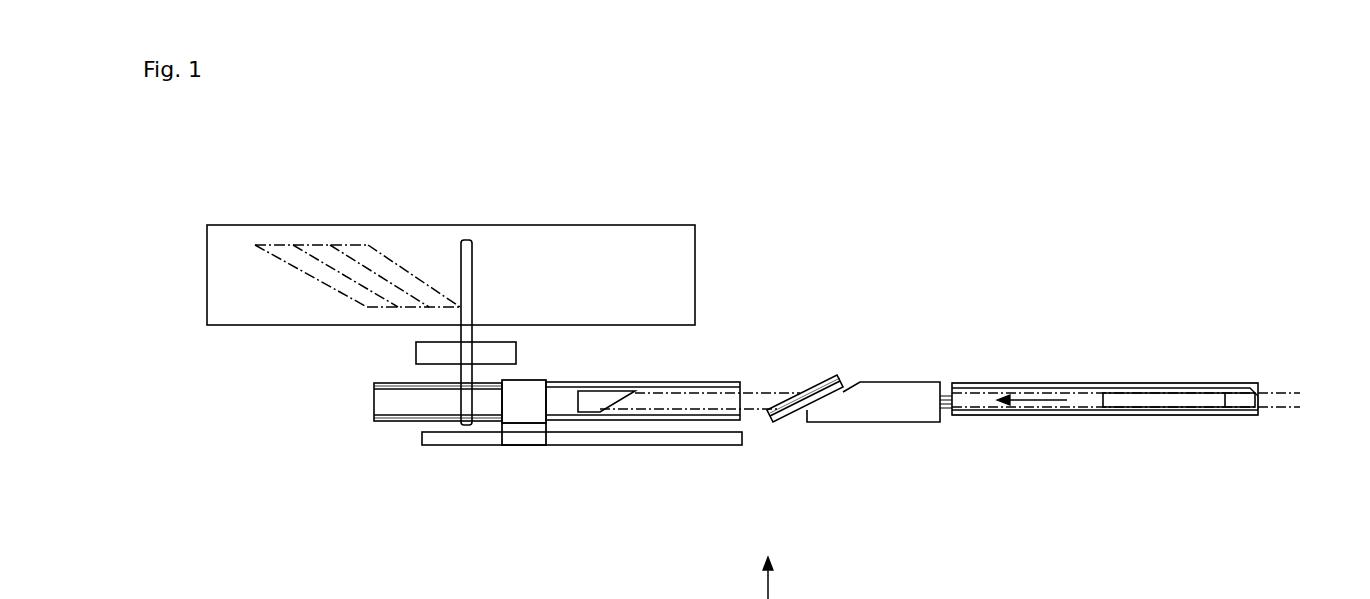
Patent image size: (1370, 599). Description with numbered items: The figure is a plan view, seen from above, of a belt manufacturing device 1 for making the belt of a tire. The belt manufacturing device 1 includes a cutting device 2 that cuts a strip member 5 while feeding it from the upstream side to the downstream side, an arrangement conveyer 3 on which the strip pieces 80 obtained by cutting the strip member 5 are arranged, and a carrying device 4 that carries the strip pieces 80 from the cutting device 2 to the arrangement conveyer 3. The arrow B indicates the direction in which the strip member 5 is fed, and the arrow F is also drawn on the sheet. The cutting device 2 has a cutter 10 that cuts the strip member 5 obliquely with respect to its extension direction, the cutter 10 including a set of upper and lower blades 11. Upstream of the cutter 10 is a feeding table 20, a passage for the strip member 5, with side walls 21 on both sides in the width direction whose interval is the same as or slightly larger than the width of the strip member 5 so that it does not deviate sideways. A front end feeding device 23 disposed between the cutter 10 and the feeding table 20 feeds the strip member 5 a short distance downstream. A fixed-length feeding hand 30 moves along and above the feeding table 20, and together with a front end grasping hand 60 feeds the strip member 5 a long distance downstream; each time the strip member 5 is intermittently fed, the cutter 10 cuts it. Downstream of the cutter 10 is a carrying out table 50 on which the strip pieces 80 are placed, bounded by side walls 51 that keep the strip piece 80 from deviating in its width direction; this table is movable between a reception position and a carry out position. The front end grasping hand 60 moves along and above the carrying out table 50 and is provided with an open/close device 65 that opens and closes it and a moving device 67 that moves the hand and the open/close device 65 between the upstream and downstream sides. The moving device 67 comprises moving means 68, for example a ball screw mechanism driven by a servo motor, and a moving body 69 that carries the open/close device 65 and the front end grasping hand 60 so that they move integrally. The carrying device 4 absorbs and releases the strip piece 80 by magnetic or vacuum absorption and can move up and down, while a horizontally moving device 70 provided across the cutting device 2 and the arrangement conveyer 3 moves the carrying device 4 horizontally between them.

The belt manufacturing device 1 is at (751, 143).
The cutting device 2 is at (1003, 318).
The arrangement conveyer 3 is at (589, 243).
The carrying device 4 is at (485, 347).
The strip member 5 is at (706, 404).
The cutter 10 is at (875, 288).
The upper and lower blades 11 is at (812, 388).
The feeding table 20 is at (1090, 400).
The side walls 21 is at (1256, 394).
The front end feeding device 23 is at (900, 402).
The fixed-length feeding hand 30 is at (1167, 400).
The carrying out table 50 is at (383, 405).
The side walls 51 is at (400, 389).
The front end grasping hand 60 is at (596, 400).
The open/close device 65 is at (518, 392).
The moving device 67 is at (506, 512).
The moving means 68 is at (596, 440).
The moving body 69 is at (526, 434).
The horizontally moving device 70 is at (467, 280).
The strip pieces 80 is at (364, 242).
The feeding direction arrow B is at (1040, 400).
The force direction F is at (784, 578).